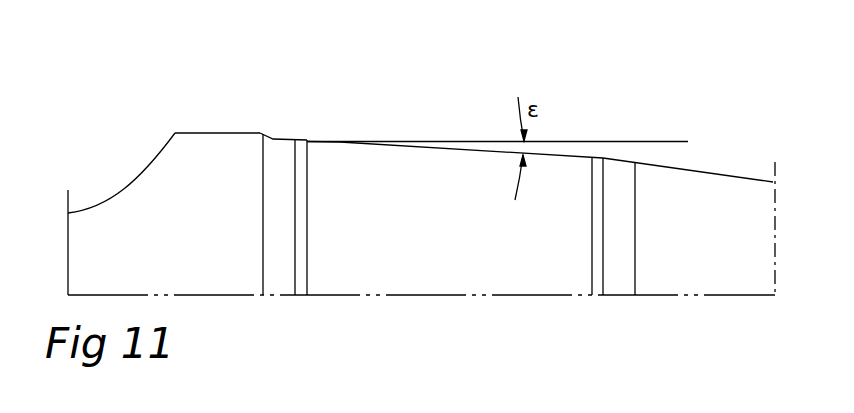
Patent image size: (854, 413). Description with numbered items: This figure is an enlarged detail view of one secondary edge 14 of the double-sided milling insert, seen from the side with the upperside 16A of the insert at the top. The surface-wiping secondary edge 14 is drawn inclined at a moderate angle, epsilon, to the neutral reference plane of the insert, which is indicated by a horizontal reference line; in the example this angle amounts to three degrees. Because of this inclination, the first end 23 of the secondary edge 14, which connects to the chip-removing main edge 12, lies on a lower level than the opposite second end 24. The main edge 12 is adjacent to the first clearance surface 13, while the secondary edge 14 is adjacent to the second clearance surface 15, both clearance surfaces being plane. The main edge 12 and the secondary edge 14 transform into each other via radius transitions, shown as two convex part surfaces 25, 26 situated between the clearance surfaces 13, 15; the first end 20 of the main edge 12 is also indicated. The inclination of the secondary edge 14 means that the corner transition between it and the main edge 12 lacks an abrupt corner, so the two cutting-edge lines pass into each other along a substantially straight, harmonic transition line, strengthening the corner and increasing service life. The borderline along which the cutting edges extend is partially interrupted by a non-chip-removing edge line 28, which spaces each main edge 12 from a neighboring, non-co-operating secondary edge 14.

The main edge 12 is at (713, 173).
The first clearance surface 13 is at (740, 267).
The secondary edge 14 is at (453, 148).
The second clearance surface 15 is at (438, 256).
The upperside 16A is at (682, 99).
The first end 20 is at (635, 162).
The first end 23 is at (592, 157).
The second end 24 is at (307, 140).
The convex part surface 25 is at (272, 231).
The convex part surface 26 is at (307, 203).
The non-chip-removing edge line 28 is at (212, 133).